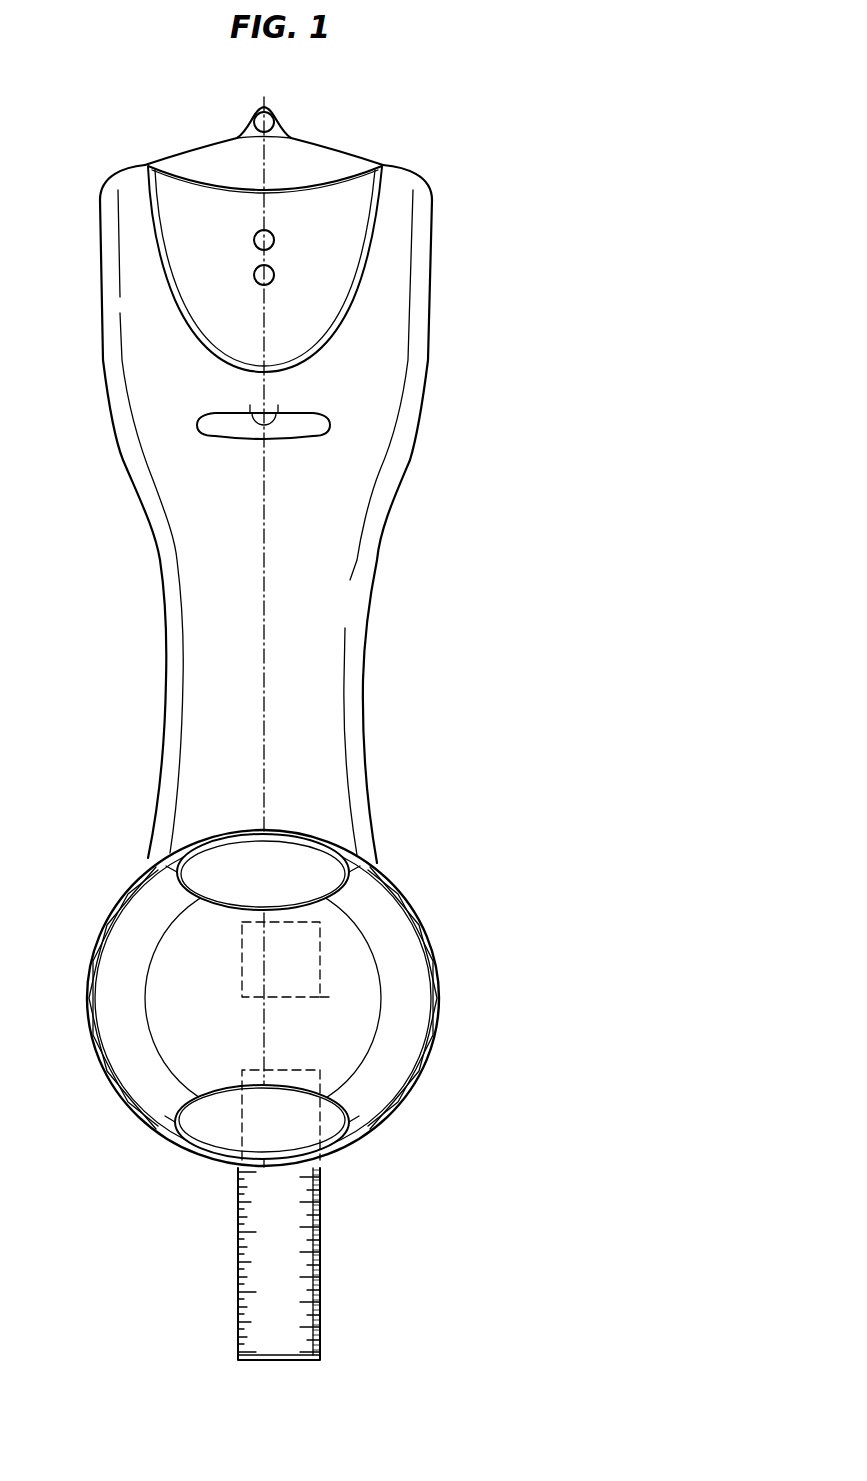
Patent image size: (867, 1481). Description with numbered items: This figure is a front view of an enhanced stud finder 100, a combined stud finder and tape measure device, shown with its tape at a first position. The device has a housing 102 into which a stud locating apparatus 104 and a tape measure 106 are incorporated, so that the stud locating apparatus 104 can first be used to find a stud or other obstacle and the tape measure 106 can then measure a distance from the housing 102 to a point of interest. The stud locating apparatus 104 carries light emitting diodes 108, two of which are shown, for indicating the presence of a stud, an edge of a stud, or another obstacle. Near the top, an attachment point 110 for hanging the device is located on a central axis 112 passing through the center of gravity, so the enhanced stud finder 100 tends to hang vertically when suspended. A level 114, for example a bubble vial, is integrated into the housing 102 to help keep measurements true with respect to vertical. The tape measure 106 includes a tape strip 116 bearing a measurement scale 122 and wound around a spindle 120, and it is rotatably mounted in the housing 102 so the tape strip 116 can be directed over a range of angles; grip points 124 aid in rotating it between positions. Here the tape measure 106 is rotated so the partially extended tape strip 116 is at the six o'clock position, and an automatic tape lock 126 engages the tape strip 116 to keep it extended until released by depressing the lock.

The enhanced stud finder 100 is at (428, 436).
The housing 102 is at (372, 588).
The stud locating apparatus 104 is at (357, 187).
The tape measure 106 is at (390, 920).
The light emitting diodes 108 is at (254, 275).
The attachment point 110 is at (275, 120).
The central axis 112 is at (263, 515).
The level 114 is at (213, 414).
The tape strip 116 is at (280, 1222).
The spindle 120 is at (233, 998).
The measurement scale 122 is at (250, 1285).
The grip points 124 is at (113, 920).
The automatic tape lock 126 is at (330, 1127).